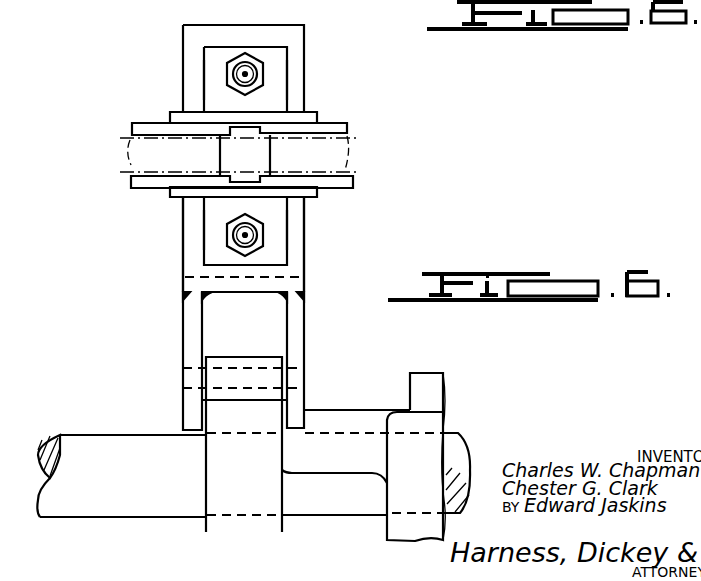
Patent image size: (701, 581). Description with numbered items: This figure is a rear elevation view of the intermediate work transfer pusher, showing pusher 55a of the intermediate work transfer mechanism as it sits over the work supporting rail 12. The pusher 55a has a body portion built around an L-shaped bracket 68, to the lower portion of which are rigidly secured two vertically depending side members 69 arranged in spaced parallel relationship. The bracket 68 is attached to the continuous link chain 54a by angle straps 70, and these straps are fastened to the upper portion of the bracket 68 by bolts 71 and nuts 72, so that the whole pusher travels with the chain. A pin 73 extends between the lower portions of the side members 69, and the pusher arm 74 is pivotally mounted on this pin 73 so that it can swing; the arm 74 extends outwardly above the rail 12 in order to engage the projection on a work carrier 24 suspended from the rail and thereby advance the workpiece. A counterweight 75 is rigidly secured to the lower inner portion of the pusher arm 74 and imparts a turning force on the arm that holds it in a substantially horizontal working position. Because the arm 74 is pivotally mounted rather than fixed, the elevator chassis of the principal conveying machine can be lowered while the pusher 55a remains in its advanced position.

The work supporting rail 12 is at (97, 450).
The work carrier 24 is at (430, 392).
The continuous link chain 54a is at (343, 125).
The pusher 55a is at (312, 256).
The L-shaped bracket 68 is at (297, 77).
The vertically depending side members 69 is at (293, 315).
The angle straps 70 is at (215, 97).
The bolts 71 is at (242, 70).
The nuts 72 is at (246, 70).
The pin 73 is at (293, 379).
The pusher arm 74 is at (267, 367).
The counterweight 75 is at (250, 507).